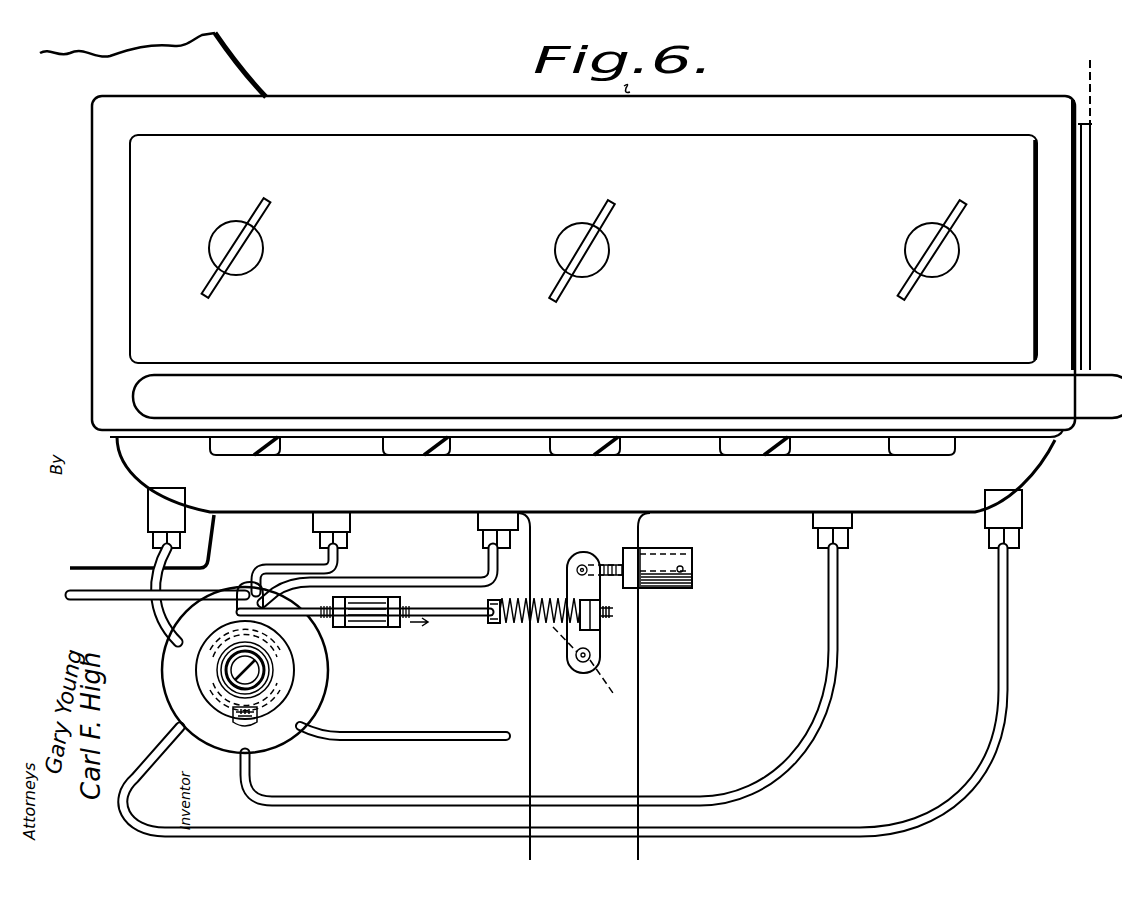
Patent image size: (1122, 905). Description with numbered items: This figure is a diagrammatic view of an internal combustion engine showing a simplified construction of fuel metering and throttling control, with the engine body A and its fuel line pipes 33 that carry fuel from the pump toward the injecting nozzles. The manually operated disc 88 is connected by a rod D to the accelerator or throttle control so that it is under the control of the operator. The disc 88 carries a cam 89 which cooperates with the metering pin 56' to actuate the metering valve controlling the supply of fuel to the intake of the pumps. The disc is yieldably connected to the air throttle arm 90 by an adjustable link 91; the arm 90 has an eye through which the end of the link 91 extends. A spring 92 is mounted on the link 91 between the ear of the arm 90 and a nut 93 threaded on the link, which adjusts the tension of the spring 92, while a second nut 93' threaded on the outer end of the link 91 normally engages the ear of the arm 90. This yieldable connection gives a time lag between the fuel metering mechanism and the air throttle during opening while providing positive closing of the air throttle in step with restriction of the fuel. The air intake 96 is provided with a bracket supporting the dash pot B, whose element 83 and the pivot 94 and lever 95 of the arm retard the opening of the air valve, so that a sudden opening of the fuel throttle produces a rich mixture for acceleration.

The range oven body A is at (592, 245).
The dash pot B is at (648, 563).
The rod D is at (105, 597).
The fuel line pipe 33 is at (368, 577).
The metering pin 56' is at (276, 746).
The thermostat element 83 is at (684, 573).
The manually operated disc 88 is at (313, 652).
The cam 89 is at (293, 702).
The air throttle arm 90 is at (575, 556).
The adjustable link 91 is at (448, 616).
The spring 92 is at (537, 621).
The nut 93 is at (476, 637).
The nut 93' is at (671, 607).
The pivot pin 94 is at (600, 660).
The lever 95 is at (612, 693).
The air intake 96 is at (583, 686).